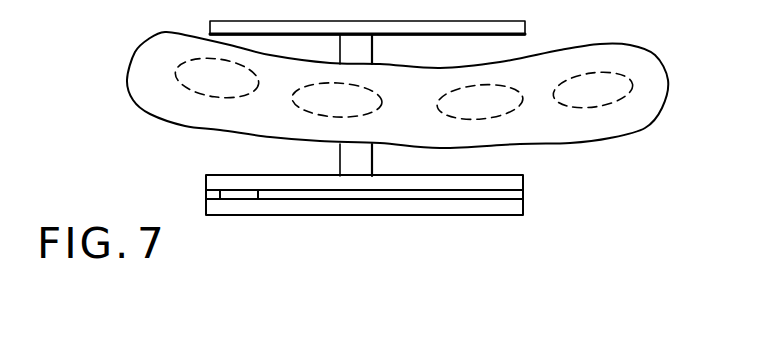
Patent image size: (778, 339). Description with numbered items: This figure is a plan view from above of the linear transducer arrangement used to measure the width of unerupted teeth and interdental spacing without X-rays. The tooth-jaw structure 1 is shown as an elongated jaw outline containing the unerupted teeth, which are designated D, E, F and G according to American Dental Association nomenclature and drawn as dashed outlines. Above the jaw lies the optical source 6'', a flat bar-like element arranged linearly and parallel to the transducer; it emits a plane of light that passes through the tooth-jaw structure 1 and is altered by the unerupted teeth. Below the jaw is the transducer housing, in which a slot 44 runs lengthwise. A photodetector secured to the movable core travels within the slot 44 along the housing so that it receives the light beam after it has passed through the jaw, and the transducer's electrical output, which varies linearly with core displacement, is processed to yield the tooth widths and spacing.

The tooth-jaw structure 1 is at (657, 86).
The optical source 6'' is at (384, 19).
The slot 44 is at (523, 197).